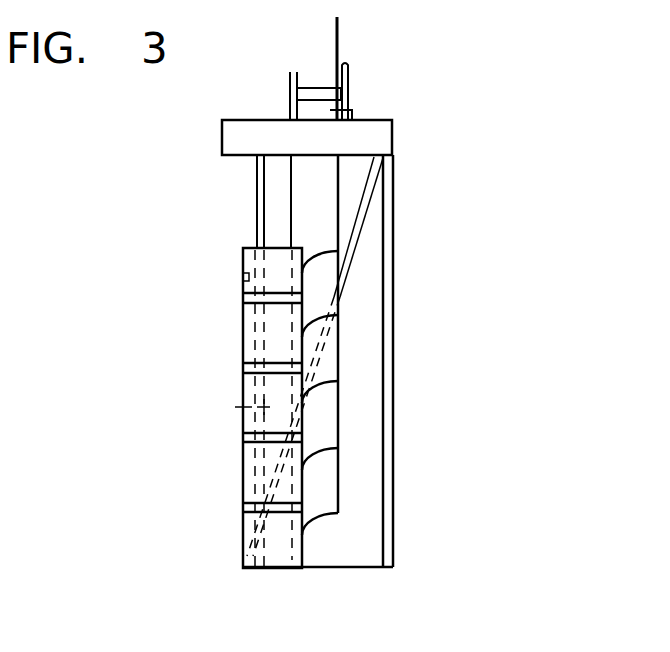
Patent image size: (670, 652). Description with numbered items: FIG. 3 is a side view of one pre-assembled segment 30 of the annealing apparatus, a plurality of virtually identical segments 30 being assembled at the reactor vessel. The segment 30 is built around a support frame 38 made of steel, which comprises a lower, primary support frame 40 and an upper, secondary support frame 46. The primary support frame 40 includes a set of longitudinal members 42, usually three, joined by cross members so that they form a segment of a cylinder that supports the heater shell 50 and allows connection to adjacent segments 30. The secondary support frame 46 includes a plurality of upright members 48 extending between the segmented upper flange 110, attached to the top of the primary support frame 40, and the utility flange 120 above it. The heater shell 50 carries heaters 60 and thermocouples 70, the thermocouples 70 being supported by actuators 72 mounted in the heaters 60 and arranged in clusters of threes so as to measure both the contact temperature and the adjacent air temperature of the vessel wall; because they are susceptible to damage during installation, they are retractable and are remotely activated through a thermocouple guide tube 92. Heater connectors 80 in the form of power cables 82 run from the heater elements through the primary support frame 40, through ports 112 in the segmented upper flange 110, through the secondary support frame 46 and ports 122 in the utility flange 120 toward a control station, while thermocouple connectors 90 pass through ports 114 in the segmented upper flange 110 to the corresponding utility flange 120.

The segment 30 is at (490, 352).
The support frame 38 is at (415, 302).
The primary support frame 40 is at (257, 200).
The longitudinal members 42 is at (393, 200).
The secondary support frame 46 is at (440, 77).
The upright members 48 is at (348, 79).
The heater shell 50 is at (287, 557).
The heaters 60 is at (243, 248).
The thermocouples 70 is at (243, 277).
The actuators 72 is at (243, 290).
The heater connectors 80 is at (337, 40).
The power cables 82 is at (340, 406).
The thermocouple connectors 90 is at (309, 357).
The thermocouple guide tube 92 is at (291, 88).
The segmented upper flange 110 is at (392, 136).
The ports 112 is at (338, 130).
The ports 114 is at (291, 132).
The utility flange 120 is at (346, 112).
The ports 122 is at (337, 89).